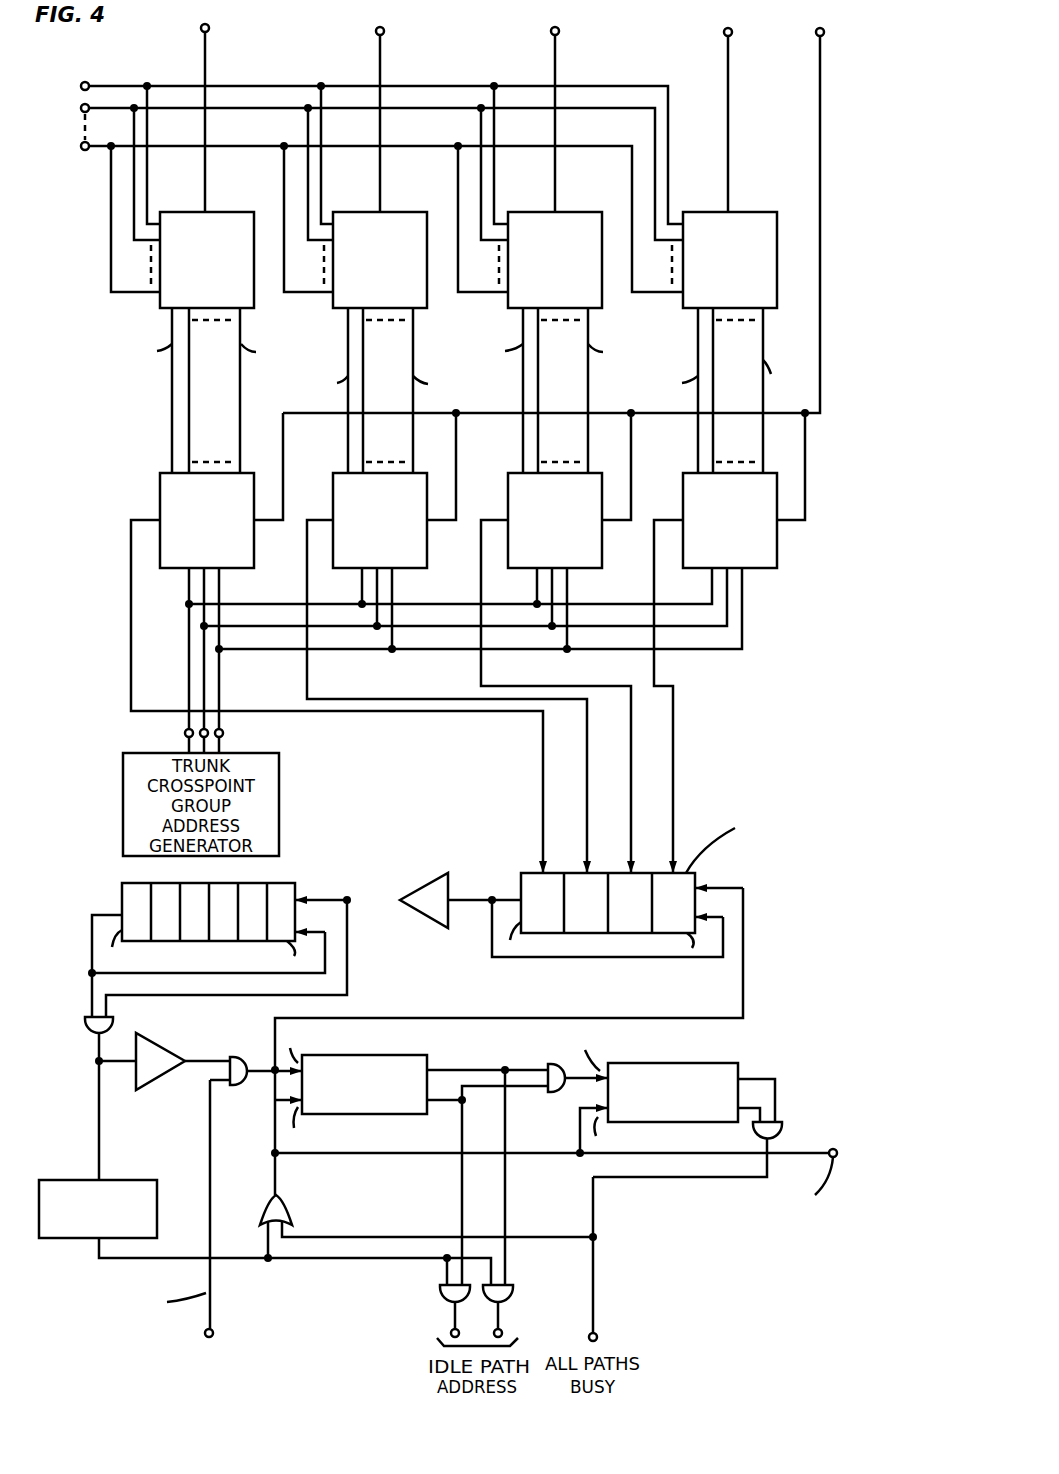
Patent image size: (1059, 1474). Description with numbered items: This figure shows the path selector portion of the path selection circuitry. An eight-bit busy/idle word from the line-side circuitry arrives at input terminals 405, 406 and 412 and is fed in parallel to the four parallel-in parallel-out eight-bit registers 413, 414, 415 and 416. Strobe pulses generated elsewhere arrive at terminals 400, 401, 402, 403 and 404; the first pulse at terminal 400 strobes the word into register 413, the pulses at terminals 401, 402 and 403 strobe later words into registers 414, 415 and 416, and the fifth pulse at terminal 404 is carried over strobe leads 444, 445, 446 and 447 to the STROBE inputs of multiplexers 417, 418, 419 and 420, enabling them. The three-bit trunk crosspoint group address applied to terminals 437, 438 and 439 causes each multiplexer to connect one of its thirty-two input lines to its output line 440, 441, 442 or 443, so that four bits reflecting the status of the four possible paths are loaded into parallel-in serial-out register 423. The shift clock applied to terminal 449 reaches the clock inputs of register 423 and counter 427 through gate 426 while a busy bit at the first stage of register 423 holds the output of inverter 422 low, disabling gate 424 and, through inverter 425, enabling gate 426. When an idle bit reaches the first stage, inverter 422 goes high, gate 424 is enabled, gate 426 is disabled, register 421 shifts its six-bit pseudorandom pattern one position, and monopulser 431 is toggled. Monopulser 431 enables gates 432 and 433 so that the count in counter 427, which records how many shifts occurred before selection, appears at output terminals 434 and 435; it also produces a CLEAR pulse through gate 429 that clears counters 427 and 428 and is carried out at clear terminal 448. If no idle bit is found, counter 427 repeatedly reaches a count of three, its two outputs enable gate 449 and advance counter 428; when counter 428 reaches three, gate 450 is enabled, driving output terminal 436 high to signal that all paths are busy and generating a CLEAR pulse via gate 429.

The terminal 400 is at (201, 29).
The strobe terminal S2 401 is at (376, 32).
The strobe terminal S3 402 is at (551, 32).
The strobe terminal S4 403 is at (724, 33).
The terminal 404 is at (816, 33).
The input terminal 405 is at (89, 83).
The input terminal 406 is at (89, 105).
The input terminal 412 is at (86, 152).
The register 413 is at (222, 212).
The register 414 is at (395, 212).
The register 415 is at (570, 212).
The register 416 is at (745, 212).
The multiplexer 417 is at (160, 487).
The multiplexer 418 is at (333, 487).
The multiplexer 419 is at (508, 487).
The multiplexer 420 is at (683, 487).
The register 421 is at (122, 900).
The inverter 422 is at (411, 890).
The register 423 is at (525, 873).
The gate 424 is at (86, 1025).
The inverter 425 is at (163, 1047).
The gate 426 is at (243, 1058).
The counter 427 is at (379, 1055).
The counter 428 is at (695, 1063).
The gate 429 is at (293, 1212).
The monopulser 431 is at (58, 1180).
The gate 432 is at (440, 1296).
The gate 433 is at (513, 1292).
The output terminal 434 is at (451, 1335).
The output terminal 435 is at (503, 1335).
The output terminal 436 is at (598, 1340).
The terminal 437 is at (186, 731).
The terminal 438 is at (201, 737).
The terminal 439 is at (222, 736).
The output line 440 is at (131, 584).
The output line 441 is at (307, 584).
The output line 442 is at (481, 584).
The output line 443 is at (654, 584).
The multiplexer strobe lead 444 is at (268, 522).
The multiplexer strobe lead 445 is at (441, 522).
The multiplexer strobe lead 446 is at (616, 522).
The multiplexer strobe lead 447 is at (790, 522).
The clear terminal to terminal 612 448 is at (834, 1149).
The gate 449 is at (554, 1093).
The gate 450 is at (755, 1134).